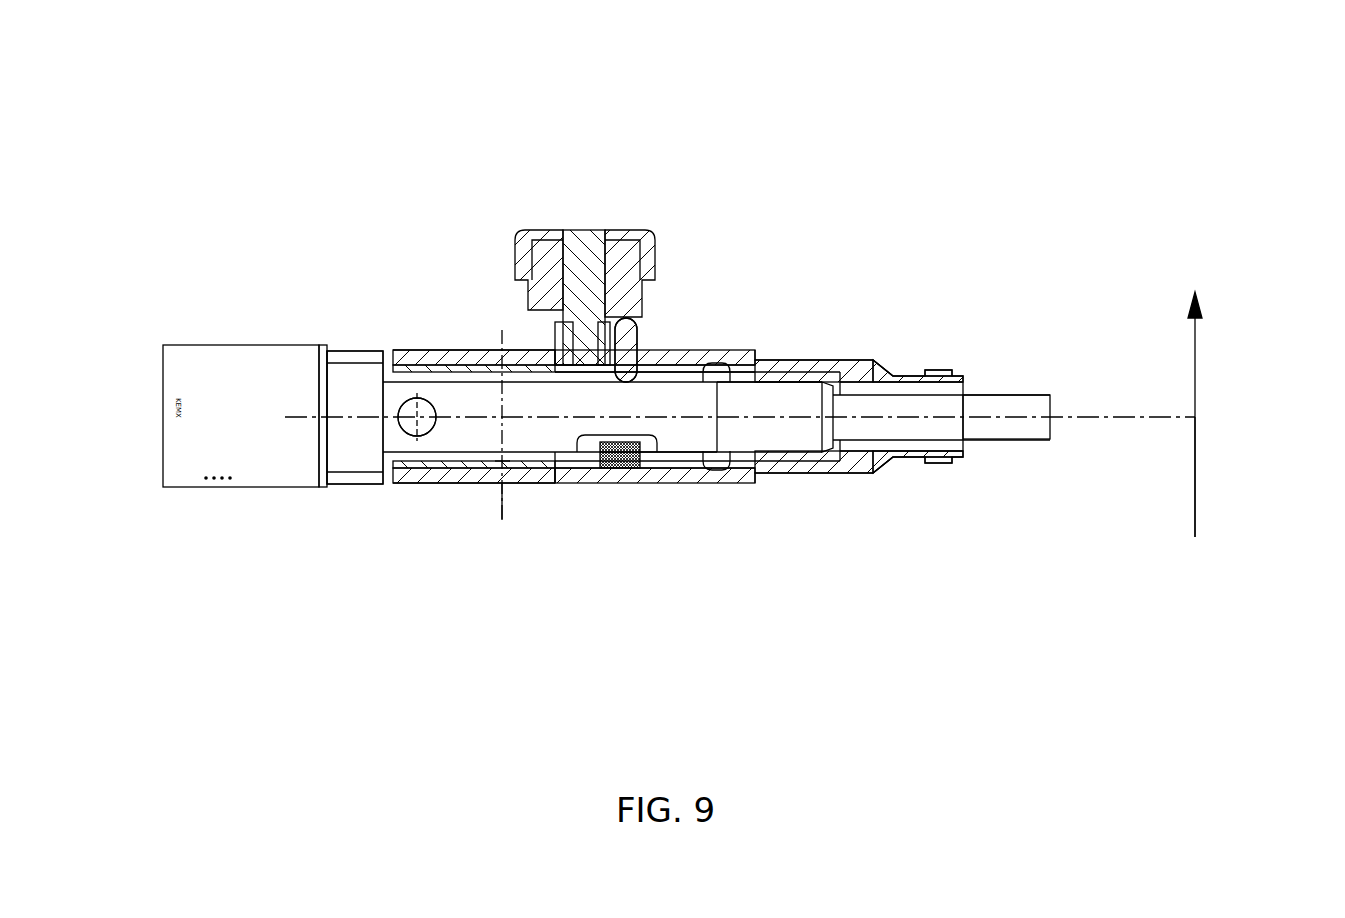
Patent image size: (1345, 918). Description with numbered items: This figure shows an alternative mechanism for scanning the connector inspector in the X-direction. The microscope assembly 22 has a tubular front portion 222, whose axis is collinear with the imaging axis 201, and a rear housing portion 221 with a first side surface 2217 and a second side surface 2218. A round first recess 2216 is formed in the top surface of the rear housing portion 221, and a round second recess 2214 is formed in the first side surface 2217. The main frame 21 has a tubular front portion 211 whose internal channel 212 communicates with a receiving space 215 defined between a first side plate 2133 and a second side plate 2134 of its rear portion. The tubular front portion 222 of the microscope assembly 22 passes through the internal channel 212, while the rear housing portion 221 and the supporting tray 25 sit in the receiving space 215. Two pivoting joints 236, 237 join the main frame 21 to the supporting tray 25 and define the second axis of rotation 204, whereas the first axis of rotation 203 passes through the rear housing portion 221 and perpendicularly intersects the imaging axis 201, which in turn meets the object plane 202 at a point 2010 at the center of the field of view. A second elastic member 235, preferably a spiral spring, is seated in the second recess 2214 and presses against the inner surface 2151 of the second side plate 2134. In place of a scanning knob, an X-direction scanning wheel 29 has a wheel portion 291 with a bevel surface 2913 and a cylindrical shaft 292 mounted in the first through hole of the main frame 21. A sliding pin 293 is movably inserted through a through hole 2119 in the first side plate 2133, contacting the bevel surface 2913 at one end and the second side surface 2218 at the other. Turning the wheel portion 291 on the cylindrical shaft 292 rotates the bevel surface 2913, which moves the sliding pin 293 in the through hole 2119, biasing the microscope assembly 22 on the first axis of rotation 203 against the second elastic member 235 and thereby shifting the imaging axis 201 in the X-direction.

The main frame 21 is at (752, 350).
The microscope assembly 22 is at (810, 437).
The supporting tray 25 is at (387, 403).
The X-direction scanning wheel 29 is at (608, 210).
The imaging axis 201 is at (1032, 415).
The object plane 202 is at (1195, 468).
The first axis of rotation 203 is at (412, 428).
The second axis of rotation 204 is at (500, 483).
The tubular front portion of the main frame 211 is at (913, 462).
The internal channel 212 is at (885, 387).
The receiving space 215 is at (740, 357).
The rear housing portion 221 is at (728, 472).
The tubular front portion of the microscope assembly 222 is at (962, 427).
The second elastic member 235 is at (606, 470).
The pivoting joint 236 is at (500, 465).
The pivoting joint 237 is at (447, 350).
The wheel portion 291 is at (538, 278).
The cylindrical shaft 292 is at (580, 240).
The sliding pin 293 is at (638, 345).
The point 2010 is at (1198, 416).
The through hole 2119 is at (652, 362).
The first side plate 2133 is at (435, 365).
The second side plate 2134 is at (520, 490).
The inner surface of the second side plate 2151 is at (568, 472).
The second recess 2214 is at (635, 460).
The first recess 2216 is at (400, 415).
The first side surface 2217 is at (668, 468).
The second side surface 2218 is at (683, 378).
The bevel surface 2913 is at (500, 333).